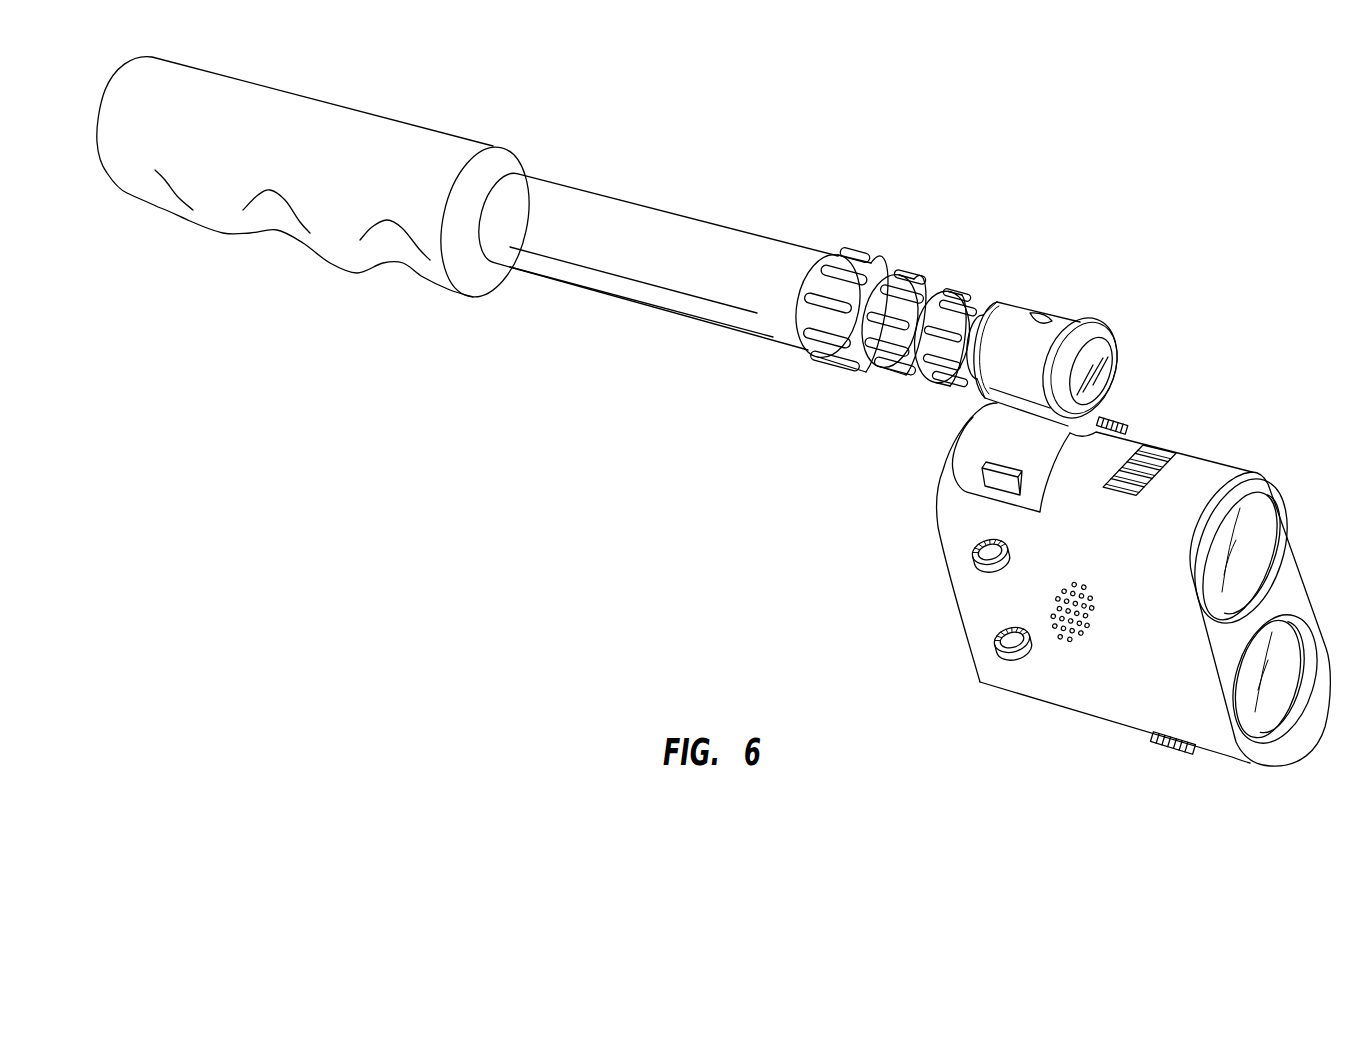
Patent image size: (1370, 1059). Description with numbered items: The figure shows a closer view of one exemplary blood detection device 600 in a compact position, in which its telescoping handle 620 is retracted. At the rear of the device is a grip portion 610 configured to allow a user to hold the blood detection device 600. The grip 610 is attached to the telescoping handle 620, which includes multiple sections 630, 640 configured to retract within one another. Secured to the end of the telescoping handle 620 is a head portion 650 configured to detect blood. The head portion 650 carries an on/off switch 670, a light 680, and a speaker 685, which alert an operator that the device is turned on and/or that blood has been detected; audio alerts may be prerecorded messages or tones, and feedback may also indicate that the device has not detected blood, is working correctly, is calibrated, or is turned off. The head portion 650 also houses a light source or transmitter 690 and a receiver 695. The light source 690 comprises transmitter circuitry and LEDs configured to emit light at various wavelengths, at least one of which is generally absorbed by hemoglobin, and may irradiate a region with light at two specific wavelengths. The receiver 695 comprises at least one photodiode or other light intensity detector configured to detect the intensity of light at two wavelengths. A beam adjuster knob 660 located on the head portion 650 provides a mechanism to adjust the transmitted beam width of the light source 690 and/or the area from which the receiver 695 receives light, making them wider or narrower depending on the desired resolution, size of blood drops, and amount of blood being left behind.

The blood detection device 600 is at (1045, 140).
The grip portion 610 is at (300, 113).
The telescoping handle 620 is at (610, 210).
The section of telescoping handle 630 is at (915, 272).
The section of telescoping handle 640 is at (968, 297).
The head portion 650 is at (950, 488).
The beam adjuster knob 660 is at (1150, 447).
The on/off switch 670 is at (967, 565).
The light 680 is at (1002, 647).
The speaker 685 is at (1073, 640).
The light source (transmitter) 690 is at (1247, 540).
The receiver 695 is at (1280, 687).